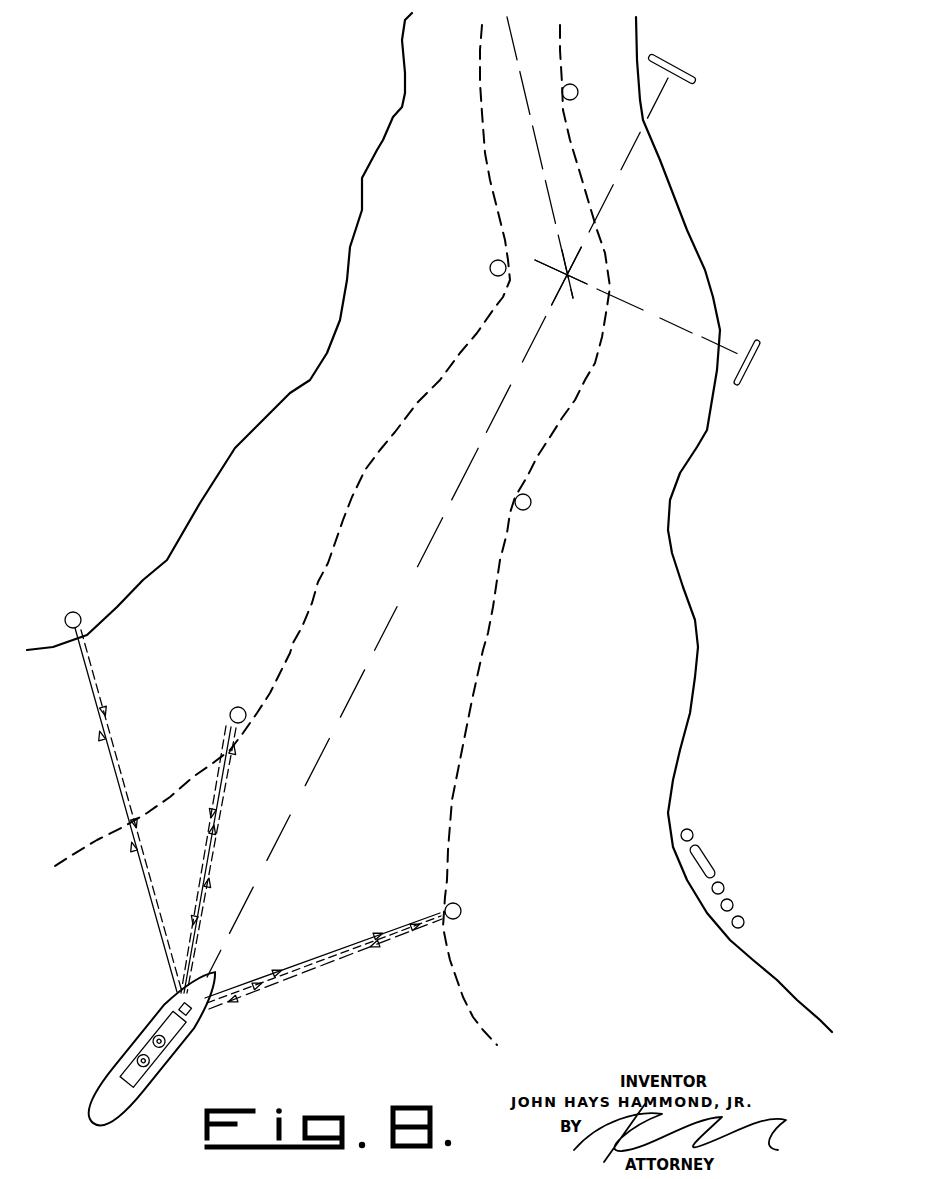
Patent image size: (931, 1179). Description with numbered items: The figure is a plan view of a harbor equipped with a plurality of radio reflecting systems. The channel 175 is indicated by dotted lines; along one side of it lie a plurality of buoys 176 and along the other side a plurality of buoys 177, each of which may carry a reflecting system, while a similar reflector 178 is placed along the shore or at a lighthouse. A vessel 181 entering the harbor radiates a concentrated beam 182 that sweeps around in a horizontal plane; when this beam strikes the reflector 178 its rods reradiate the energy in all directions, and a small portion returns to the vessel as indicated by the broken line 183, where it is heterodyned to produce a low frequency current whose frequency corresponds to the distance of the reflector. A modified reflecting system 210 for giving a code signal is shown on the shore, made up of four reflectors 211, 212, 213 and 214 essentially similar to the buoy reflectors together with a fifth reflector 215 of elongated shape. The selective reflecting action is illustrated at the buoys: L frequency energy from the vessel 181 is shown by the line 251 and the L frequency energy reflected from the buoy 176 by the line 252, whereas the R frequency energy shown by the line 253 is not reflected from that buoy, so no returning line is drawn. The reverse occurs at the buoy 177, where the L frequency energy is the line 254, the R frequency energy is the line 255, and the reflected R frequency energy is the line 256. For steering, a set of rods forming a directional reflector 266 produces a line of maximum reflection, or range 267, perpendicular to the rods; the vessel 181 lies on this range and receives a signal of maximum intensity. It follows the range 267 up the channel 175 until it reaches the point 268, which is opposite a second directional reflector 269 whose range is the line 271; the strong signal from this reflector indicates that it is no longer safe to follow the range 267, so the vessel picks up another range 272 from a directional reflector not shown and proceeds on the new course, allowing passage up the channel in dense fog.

The channel 175 is at (495, 575).
The buoys 176 is at (491, 273).
The buoys 177 is at (576, 97).
The reflector 178 is at (78, 611).
The vessel 181 is at (150, 1028).
The beam 182 is at (110, 762).
The reradiated energy 183 is at (118, 762).
The reflecting system 210 is at (716, 875).
The reflector 211 is at (693, 832).
The reflector 212 is at (725, 888).
The reflector 213 is at (733, 905).
The reflector 214 is at (745, 923).
The fifth reflector 215 is at (708, 858).
The L frequency energy line 251 is at (210, 843).
The reflected L frequency energy line 252 is at (207, 860).
The R frequency energy line 253 is at (233, 780).
The L frequency energy line 254 is at (335, 948).
The R frequency energy line 255 is at (280, 978).
The reflected R frequency energy line 256 is at (353, 957).
The directional reflector 266 is at (692, 84).
The range 267 is at (471, 456).
The point 268 is at (562, 279).
The second directional reflector 269 is at (740, 383).
The range 271 is at (662, 320).
The range 272 is at (537, 140).